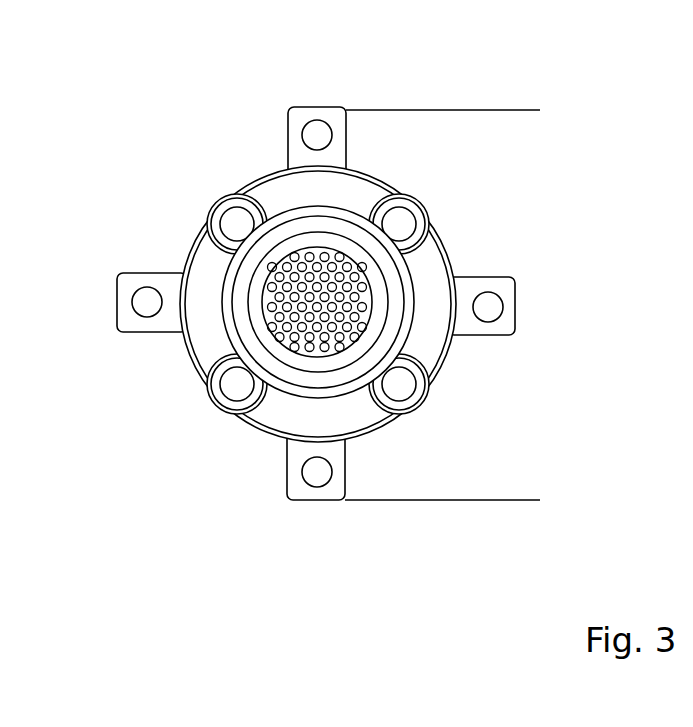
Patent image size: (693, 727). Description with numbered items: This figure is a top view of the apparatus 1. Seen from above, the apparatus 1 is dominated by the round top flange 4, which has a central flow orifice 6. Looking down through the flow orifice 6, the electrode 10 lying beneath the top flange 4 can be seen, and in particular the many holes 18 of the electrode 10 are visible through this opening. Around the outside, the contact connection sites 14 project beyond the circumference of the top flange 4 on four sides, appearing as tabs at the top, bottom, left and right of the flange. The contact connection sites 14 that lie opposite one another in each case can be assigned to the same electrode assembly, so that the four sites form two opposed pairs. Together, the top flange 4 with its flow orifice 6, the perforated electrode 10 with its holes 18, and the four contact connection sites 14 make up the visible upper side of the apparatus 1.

The apparatus 1 is at (329, 258).
The top flange 4 is at (430, 267).
The flow orifice 6 is at (400, 302).
The electrode 10 is at (300, 255).
The contact connection sites 14 is at (332, 118).
The holes 18 is at (293, 313).